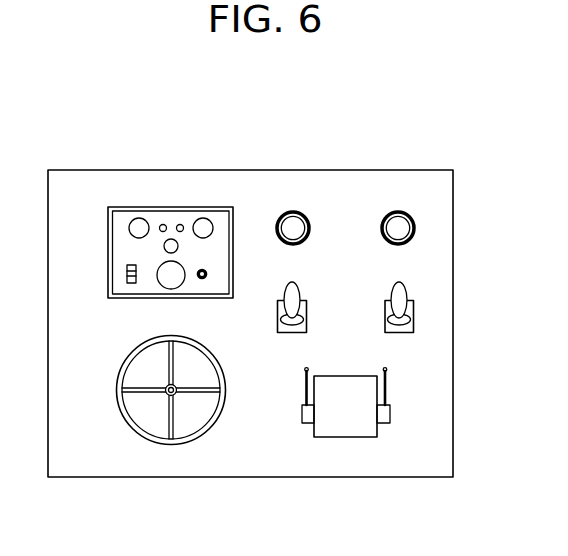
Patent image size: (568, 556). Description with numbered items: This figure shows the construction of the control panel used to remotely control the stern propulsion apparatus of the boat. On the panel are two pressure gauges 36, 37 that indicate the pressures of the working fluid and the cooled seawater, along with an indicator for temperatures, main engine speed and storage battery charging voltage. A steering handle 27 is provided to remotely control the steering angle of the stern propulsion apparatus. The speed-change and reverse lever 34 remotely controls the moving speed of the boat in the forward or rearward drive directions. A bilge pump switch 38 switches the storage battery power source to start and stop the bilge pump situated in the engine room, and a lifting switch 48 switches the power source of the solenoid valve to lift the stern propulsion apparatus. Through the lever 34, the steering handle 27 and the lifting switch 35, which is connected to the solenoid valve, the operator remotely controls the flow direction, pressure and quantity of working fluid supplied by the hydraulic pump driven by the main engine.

The steering handle 27 is at (173, 440).
The speed-change and reverse lever 34 is at (347, 438).
The lifting switch 35 is at (415, 315).
The pressure gauge 36 is at (139, 218).
The pressure gauge 37 is at (203, 218).
The bilge pump switch 38 is at (293, 210).
The lifting switch 48 is at (400, 211).